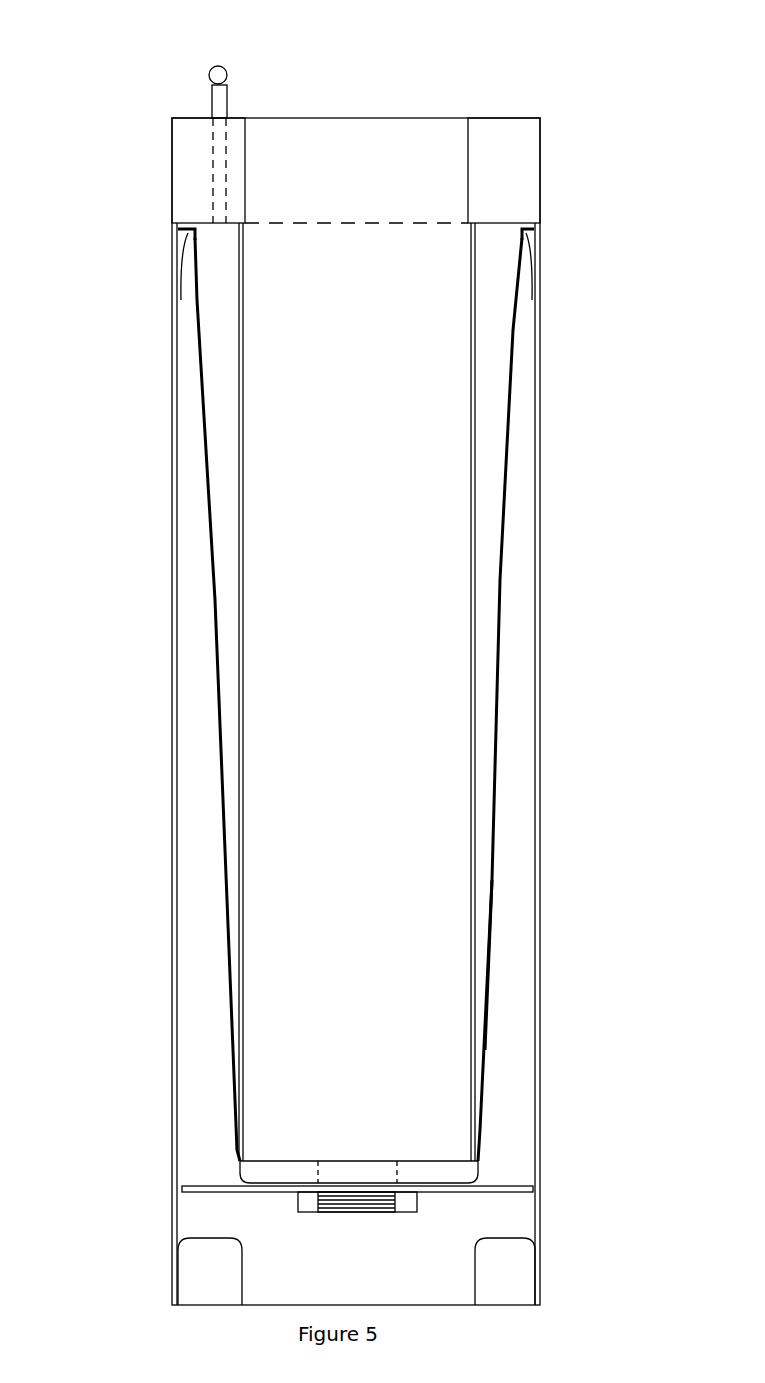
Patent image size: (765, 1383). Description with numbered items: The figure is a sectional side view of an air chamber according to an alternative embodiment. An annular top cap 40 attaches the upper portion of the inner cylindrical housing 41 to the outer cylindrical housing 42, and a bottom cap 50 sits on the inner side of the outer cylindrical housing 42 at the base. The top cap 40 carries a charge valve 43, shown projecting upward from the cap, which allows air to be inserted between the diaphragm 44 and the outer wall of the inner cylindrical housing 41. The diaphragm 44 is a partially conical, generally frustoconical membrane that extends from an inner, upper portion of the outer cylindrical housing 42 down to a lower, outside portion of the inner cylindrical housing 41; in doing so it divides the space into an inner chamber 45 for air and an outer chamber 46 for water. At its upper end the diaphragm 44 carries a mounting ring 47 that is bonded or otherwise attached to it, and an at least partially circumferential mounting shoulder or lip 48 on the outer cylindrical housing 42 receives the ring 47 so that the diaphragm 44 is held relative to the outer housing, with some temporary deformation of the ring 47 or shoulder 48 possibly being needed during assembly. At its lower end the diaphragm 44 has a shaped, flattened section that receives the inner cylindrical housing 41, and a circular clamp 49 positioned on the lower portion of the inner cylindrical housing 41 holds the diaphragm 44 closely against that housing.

The annular top cap 40 is at (525, 112).
The inner cylindrical housing 41 is at (243, 293).
The outer cylindrical housing 42 is at (170, 660).
The charge valve 43 is at (196, 80).
The diaphragm 44 is at (503, 543).
The inner chamber 45 is at (485, 392).
The outer chamber 46 is at (512, 960).
The mounting ring 47 is at (175, 225).
The mounting shoulder 48 is at (187, 235).
The circular clamp 49 is at (420, 1172).
The bottom cap 50 is at (507, 1275).